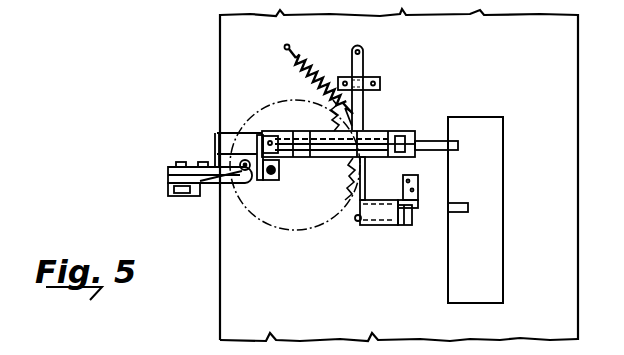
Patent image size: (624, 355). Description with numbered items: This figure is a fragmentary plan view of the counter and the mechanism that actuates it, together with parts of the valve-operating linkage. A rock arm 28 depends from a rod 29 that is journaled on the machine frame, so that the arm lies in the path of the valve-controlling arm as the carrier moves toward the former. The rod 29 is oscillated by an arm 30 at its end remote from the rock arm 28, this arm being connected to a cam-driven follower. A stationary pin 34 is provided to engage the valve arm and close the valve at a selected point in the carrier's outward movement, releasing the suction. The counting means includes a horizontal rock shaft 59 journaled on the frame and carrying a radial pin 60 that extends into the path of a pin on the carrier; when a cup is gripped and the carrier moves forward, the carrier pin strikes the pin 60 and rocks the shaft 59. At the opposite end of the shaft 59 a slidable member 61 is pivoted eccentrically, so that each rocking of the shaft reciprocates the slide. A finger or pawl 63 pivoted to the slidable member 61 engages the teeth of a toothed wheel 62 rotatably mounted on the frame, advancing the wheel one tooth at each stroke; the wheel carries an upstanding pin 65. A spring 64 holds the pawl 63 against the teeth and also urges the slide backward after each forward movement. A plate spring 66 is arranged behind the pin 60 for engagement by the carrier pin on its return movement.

The rock arm 28 is at (425, 140).
The rod 29 is at (318, 142).
The arm 30 is at (260, 182).
The stationary pin 34 is at (466, 206).
The rock shaft 59 is at (382, 226).
The radial pin 60 is at (414, 223).
The slidable member 61 is at (379, 178).
The toothed wheel 62 is at (314, 226).
The finger or pawl 63 is at (356, 161).
The spring 64 is at (314, 80).
The pin 65 is at (247, 160).
The plate spring 66 is at (414, 187).